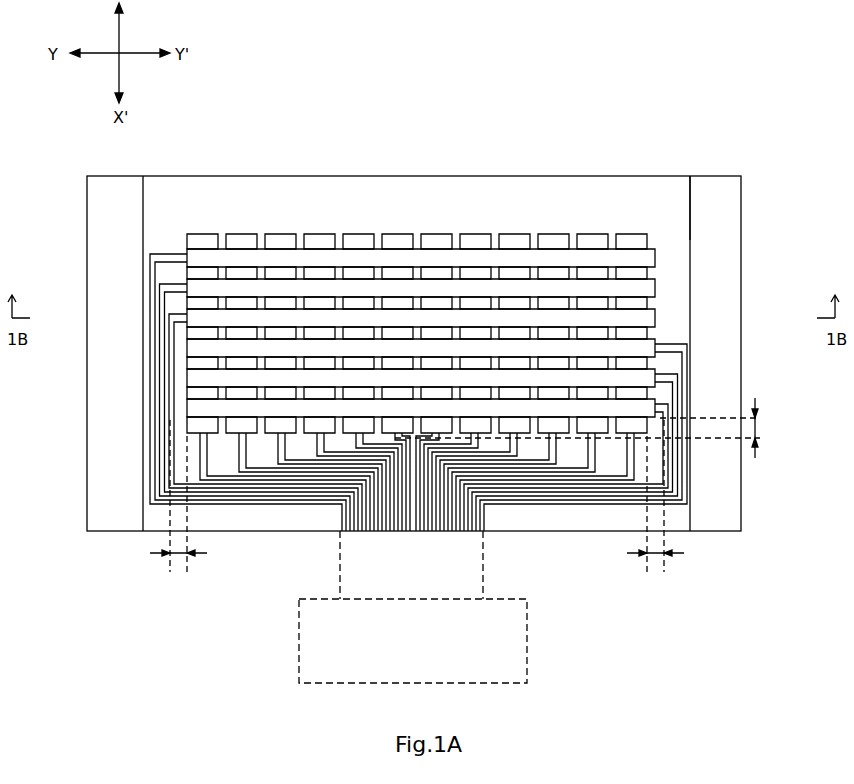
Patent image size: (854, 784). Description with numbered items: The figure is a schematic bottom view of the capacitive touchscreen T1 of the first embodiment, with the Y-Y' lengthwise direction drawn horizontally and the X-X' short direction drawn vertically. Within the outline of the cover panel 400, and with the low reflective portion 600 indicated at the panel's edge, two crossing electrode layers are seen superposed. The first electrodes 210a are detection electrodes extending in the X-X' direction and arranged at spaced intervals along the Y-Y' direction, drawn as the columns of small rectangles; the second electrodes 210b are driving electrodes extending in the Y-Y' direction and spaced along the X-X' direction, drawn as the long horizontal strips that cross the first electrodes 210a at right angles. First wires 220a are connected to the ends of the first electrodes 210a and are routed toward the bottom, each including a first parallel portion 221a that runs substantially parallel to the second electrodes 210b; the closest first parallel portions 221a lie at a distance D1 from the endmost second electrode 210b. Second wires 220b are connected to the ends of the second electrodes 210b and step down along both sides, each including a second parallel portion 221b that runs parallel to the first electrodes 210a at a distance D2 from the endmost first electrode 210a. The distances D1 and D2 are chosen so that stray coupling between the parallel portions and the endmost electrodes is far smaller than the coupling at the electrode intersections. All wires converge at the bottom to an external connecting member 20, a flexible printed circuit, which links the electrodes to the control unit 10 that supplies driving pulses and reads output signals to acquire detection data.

The control unit 10 is at (297, 638).
The external connecting member 20 is at (527, 600).
The cover panel 400 is at (728, 214).
The low reflective portion 600 is at (692, 193).
The first electrodes 210a is at (242, 234).
The second electrodes 210b is at (200, 408).
The first wires 220a is at (417, 506).
The first parallel portion 221a is at (388, 440).
The second wires 220b is at (418, 389).
The second parallel portion 221b is at (168, 356).
The distance D1 is at (762, 427).
The distance D2 is at (417, 511).
The capacitive touchscreen T1 is at (291, 95).